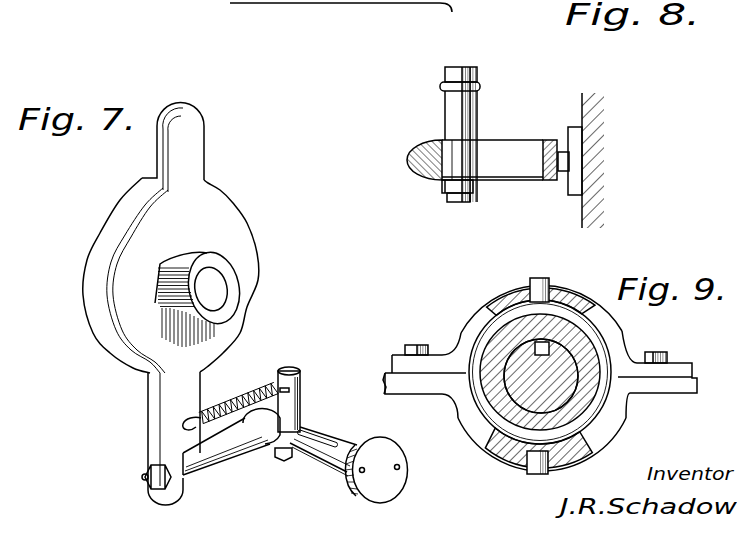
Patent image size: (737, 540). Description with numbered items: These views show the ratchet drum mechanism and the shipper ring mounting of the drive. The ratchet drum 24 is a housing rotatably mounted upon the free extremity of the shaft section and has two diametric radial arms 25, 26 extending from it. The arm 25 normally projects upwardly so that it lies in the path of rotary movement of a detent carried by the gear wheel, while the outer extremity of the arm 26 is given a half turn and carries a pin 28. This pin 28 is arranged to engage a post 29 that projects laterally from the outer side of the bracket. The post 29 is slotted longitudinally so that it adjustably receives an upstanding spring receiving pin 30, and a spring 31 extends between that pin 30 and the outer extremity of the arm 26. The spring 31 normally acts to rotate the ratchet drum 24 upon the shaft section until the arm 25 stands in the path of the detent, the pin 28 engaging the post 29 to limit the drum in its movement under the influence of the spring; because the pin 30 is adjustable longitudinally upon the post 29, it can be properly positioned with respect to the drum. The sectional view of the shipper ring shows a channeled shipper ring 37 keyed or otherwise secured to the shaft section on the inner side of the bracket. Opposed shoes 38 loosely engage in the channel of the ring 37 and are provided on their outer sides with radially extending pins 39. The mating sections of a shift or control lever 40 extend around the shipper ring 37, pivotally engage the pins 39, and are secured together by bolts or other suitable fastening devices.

In FIG. 7, the ratchet drum 24 is at (240, 232).
In FIG. 7, the arm 25 is at (192, 163).
In FIG. 7, the arm 26 is at (170, 390).
In FIG. 7, the pin 28 is at (225, 462).
In FIG. 7, the post 29 is at (337, 473).
In FIG. 8, the post 29 is at (550, 147).
In FIG. 7, the spring receiving pin 30 is at (300, 405).
In FIG. 8, the spring receiving pin 30 is at (474, 122).
In FIG. 7, the spring 31 is at (242, 395).
In FIG. 8, the spring 31 is at (477, 72).
In FIG. 9, the shipper ring 37 is at (600, 417).
In FIG. 9, the shoes 38 is at (558, 312).
In FIG. 9, the pins 39 is at (538, 278).
In FIG. 9, the shift lever 40 is at (697, 394).